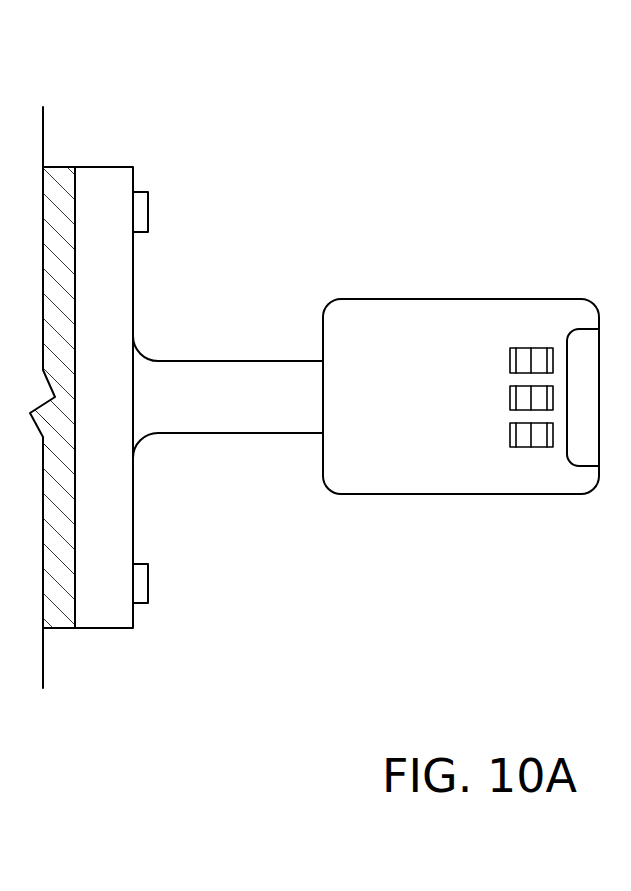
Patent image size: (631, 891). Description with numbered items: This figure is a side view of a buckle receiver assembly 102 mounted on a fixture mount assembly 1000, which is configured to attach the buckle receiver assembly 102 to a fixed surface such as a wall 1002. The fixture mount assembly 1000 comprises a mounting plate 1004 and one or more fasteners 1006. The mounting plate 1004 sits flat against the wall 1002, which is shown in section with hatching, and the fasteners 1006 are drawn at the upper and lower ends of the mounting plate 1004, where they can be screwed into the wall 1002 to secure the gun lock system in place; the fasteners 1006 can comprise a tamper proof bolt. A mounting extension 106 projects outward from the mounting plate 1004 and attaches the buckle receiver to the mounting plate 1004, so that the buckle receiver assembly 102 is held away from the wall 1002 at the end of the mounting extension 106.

The fixture mount assembly 1000 is at (190, 357).
The wall 1002 is at (60, 167).
The mounting plate 1004 is at (108, 305).
The fasteners 1006 is at (148, 210).
The mounting extension 106 is at (218, 433).
The buckle receiver assembly 102 is at (462, 494).